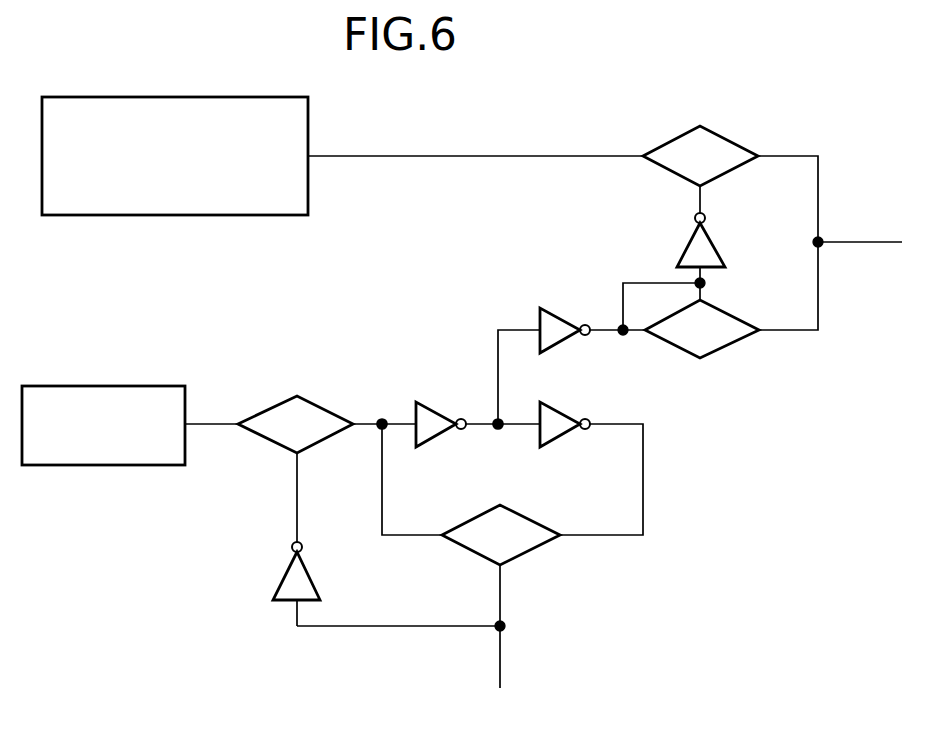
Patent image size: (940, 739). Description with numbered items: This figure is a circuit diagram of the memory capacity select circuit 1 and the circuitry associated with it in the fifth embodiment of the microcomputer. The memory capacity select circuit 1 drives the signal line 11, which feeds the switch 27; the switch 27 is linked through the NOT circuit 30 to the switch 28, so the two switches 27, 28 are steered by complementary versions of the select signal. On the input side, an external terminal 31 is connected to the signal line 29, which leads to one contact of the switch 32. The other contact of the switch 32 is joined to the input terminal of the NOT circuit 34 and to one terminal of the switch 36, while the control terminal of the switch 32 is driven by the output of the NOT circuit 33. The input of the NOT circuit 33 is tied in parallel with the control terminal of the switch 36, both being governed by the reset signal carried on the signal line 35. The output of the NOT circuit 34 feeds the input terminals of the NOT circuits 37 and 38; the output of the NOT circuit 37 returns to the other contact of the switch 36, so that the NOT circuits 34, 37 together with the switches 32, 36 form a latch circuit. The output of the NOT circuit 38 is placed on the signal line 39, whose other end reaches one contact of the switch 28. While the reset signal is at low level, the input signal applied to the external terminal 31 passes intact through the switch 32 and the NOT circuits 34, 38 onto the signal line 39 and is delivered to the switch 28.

The memory capacity select circuit 1 is at (165, 97).
The signal line 11 is at (475, 126).
The switch 27 is at (720, 131).
The switch 28 is at (738, 309).
The signal line 29 is at (212, 423).
The NOT circuit 30 is at (688, 247).
The external terminal 31 is at (98, 385).
The switch 32 is at (310, 400).
The NOT circuit 33 is at (283, 577).
The NOT circuit 34 is at (428, 403).
The signal line 35 is at (503, 660).
The switch 36 is at (527, 520).
The NOT circuit 37 is at (562, 410).
The NOT circuit 38 is at (557, 313).
The signal line 39 is at (600, 323).